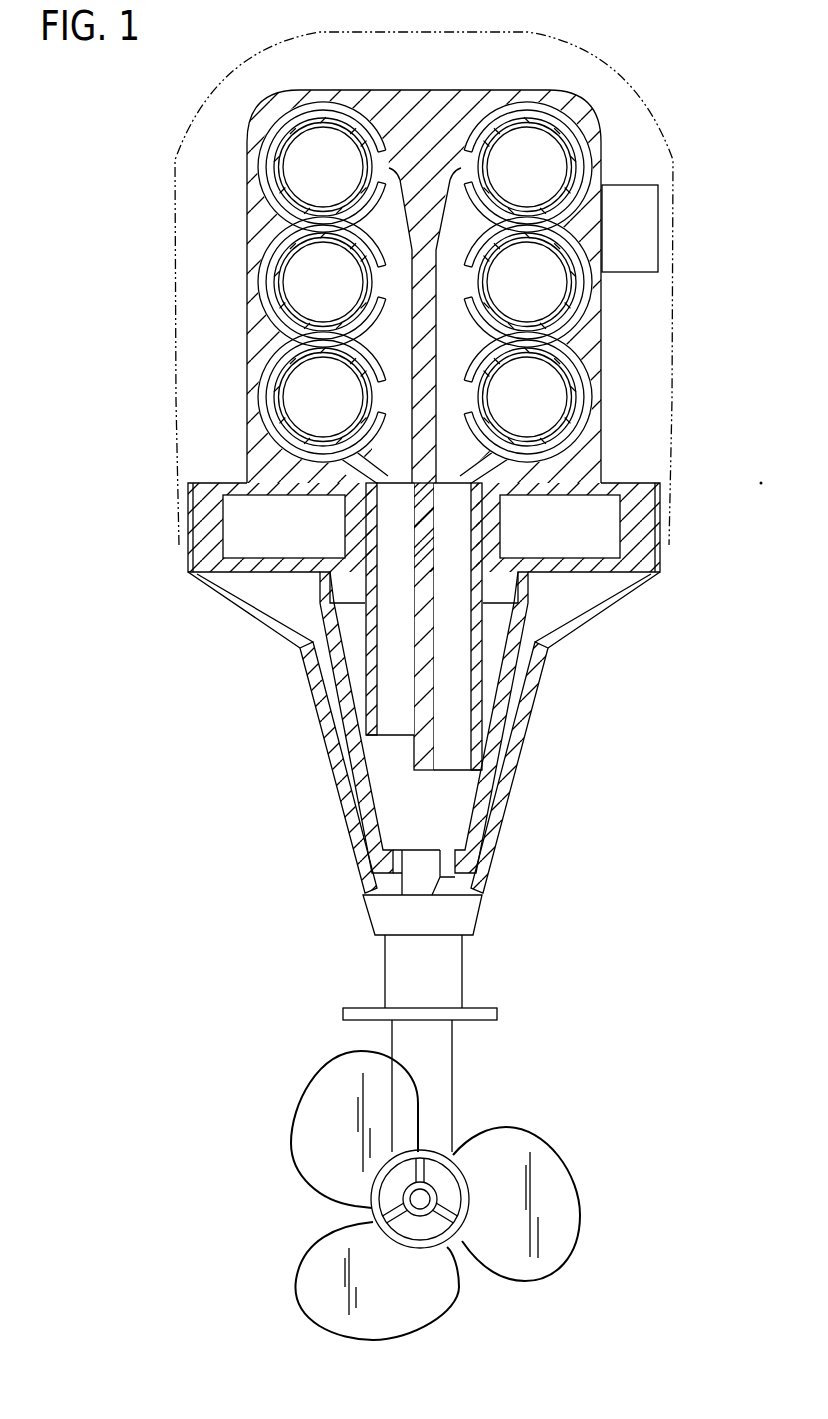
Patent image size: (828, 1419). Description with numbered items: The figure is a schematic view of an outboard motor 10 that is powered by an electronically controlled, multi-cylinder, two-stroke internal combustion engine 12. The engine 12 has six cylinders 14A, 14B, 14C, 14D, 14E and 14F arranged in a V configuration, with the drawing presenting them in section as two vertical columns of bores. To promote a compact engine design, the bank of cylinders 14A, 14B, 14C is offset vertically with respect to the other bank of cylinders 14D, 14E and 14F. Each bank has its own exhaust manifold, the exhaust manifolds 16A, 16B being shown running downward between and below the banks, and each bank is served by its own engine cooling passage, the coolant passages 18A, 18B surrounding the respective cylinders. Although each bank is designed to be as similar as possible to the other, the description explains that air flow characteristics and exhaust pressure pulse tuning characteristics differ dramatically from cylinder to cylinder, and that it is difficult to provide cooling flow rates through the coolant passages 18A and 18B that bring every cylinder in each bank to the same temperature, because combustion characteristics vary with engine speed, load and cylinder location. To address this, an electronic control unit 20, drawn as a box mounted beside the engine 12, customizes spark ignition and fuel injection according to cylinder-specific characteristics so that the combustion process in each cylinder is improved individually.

The outboard motor 10 is at (672, 66).
The two-stroke internal combustion engine 12 is at (247, 246).
The cylinder 14A is at (289, 183).
The cylinder 14B is at (289, 298).
The cylinder 14C is at (287, 398).
The cylinder 14D is at (565, 172).
The cylinder 14E is at (565, 287).
The cylinder 14F is at (565, 402).
The exhaust manifold 16A is at (378, 722).
The exhaust manifold 16B is at (437, 752).
The engine cooling passage 18A is at (292, 118).
The engine cooling passage 18B is at (557, 118).
The electronic control unit 20 is at (640, 185).